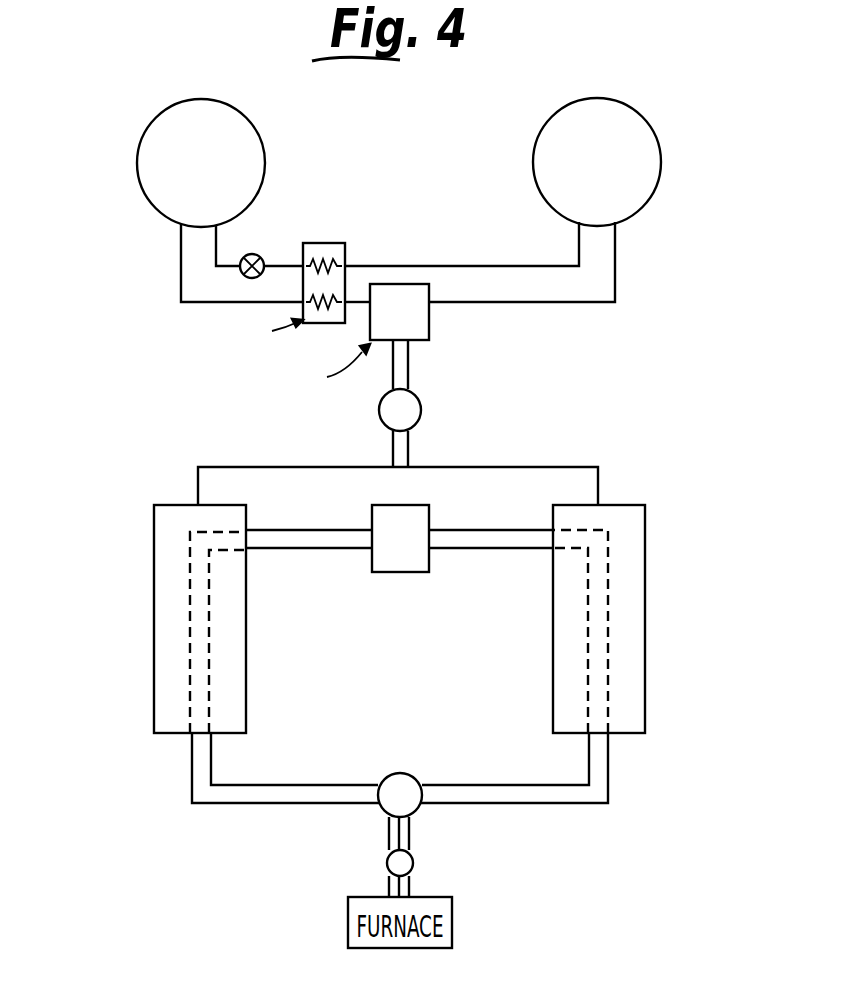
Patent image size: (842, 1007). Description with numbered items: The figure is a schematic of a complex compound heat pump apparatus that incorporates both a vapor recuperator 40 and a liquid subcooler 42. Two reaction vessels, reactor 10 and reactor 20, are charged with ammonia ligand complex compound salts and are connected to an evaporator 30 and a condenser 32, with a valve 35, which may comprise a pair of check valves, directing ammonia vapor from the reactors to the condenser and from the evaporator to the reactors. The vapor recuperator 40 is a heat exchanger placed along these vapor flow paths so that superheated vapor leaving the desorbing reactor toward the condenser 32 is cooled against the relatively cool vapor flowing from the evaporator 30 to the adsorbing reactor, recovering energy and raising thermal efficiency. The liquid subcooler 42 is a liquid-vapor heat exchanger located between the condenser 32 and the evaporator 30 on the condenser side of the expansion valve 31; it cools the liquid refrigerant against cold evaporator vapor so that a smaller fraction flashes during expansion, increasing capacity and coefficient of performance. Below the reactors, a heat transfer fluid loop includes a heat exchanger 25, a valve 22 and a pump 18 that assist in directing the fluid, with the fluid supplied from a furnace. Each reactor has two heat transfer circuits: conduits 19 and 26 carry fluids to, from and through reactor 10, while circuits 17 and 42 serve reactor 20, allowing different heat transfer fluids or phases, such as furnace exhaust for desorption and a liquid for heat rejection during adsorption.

The reactor 10 is at (645, 593).
The heat transfer circuit 17 is at (283, 785).
The pump 18 is at (413, 858).
The conduit 19 is at (477, 785).
The reactor 20 is at (153, 605).
The valve 22 is at (395, 773).
The heat exchanger 25 is at (376, 574).
The conduit 26 is at (555, 803).
The evaporator 30 is at (146, 127).
The expansion valve 31 is at (258, 253).
The condenser 32 is at (659, 145).
The valve 35 is at (422, 414).
The vapor recuperator 40 is at (430, 330).
The liquid subcooler 42 is at (345, 243).